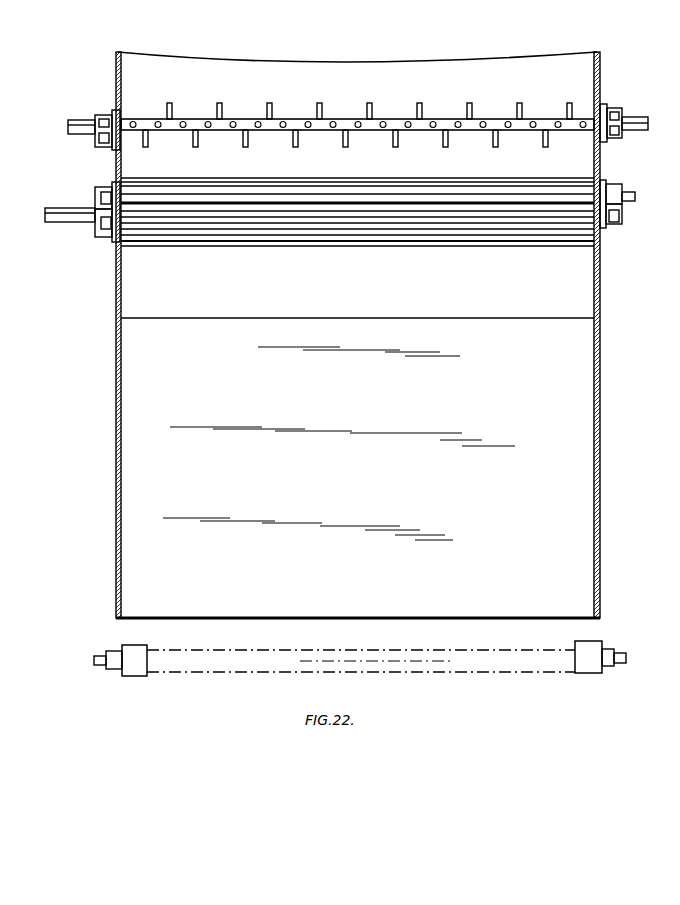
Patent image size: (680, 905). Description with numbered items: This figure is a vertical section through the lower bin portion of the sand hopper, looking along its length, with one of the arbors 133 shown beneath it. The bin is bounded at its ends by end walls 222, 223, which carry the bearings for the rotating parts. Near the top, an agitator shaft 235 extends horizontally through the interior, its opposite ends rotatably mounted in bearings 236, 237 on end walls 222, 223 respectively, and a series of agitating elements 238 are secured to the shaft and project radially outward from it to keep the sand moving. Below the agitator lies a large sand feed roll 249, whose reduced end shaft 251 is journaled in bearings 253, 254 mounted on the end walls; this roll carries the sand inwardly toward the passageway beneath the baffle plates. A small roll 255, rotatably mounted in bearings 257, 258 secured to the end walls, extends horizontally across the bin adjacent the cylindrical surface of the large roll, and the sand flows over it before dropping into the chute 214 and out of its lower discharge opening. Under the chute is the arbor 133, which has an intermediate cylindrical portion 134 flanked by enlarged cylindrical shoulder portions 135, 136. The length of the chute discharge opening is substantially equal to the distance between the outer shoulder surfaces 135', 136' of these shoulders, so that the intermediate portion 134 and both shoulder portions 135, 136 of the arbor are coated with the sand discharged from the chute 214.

The chute portion 214 is at (105, 548).
The end wall 222 is at (602, 86).
The end wall 223 is at (115, 83).
The agitator shaft 235 is at (197, 118).
The bearing 236 is at (611, 138).
The bearing 237 is at (101, 145).
The agitating elements 238 is at (317, 106).
The large sand feed roll 249 is at (227, 232).
The reduced end shaft 251 is at (66, 224).
The bearing 253 is at (614, 226).
The bearing 254 is at (102, 238).
The small roll 255 is at (221, 203).
The bearing 257 is at (612, 190).
The bearing 258 is at (96, 202).
The arbor 133 is at (254, 683).
The intermediate cylindrical portion 134 is at (470, 666).
The enlarged cylindrical shoulder portion 135 is at (147, 677).
The outer shoulder surface 135' is at (114, 688).
The enlarged cylindrical shoulder portion 136 is at (581, 675).
The outer shoulder surface 136' is at (617, 679).